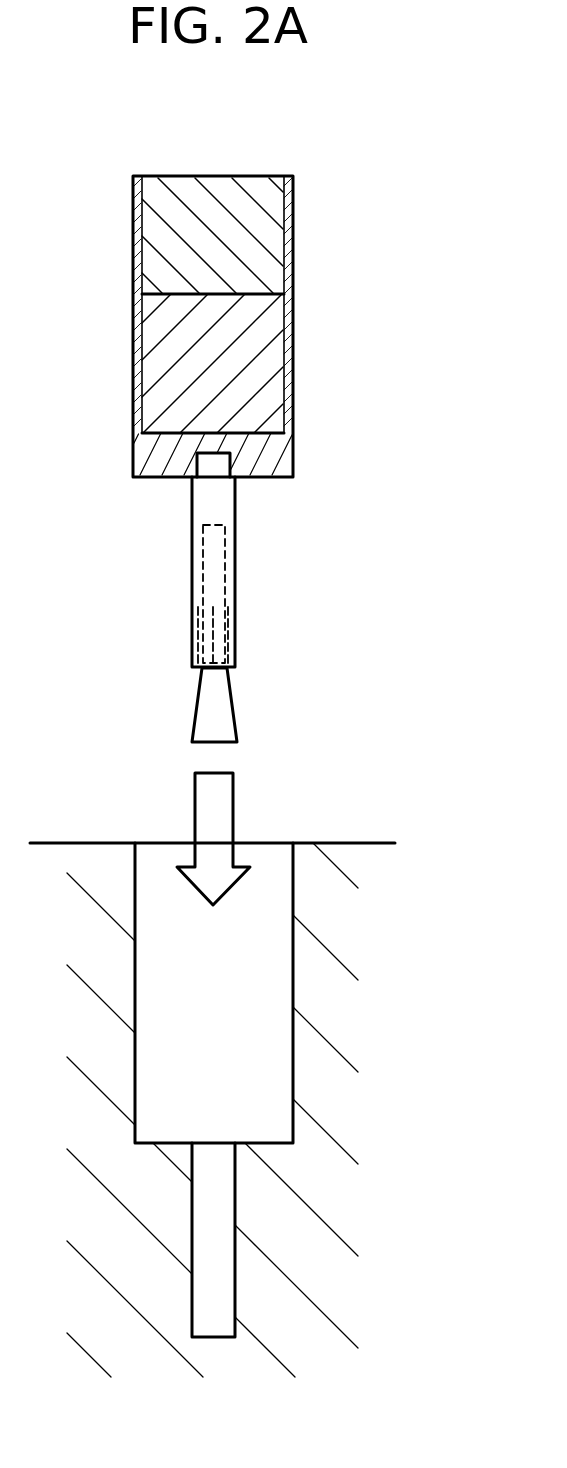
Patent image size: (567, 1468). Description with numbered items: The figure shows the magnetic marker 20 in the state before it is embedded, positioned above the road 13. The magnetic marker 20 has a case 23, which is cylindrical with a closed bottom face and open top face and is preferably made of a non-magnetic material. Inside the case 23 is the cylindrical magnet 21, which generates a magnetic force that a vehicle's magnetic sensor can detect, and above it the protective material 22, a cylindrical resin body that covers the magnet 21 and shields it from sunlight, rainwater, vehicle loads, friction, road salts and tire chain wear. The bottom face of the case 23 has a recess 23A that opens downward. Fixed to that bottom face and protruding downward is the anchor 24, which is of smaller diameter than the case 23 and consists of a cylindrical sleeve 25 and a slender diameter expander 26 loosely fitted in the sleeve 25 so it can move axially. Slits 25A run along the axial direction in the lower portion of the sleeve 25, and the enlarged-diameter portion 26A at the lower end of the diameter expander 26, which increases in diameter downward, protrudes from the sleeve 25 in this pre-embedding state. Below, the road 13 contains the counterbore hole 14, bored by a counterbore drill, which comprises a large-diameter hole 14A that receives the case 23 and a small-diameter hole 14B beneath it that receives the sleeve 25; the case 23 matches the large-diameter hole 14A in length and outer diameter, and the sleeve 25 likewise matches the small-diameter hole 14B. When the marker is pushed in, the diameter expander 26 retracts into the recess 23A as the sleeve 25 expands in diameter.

The magnetic marker 20 is at (274, 152).
The protective material 22 is at (272, 243).
The magnet 21 is at (272, 362).
The case 23 is at (290, 453).
The recess 23A is at (221, 467).
The anchor 24 is at (178, 612).
The diameter expander 26 is at (190, 546).
The sleeve 25 is at (233, 552).
The slits 25A is at (220, 637).
The enlarged-diameter portion 26A is at (223, 705).
The road 13 is at (360, 843).
The counterbore hole 14 is at (397, 1085).
The large-diameter hole 14A is at (293, 1088).
The small-diameter hole 14B is at (232, 1167).